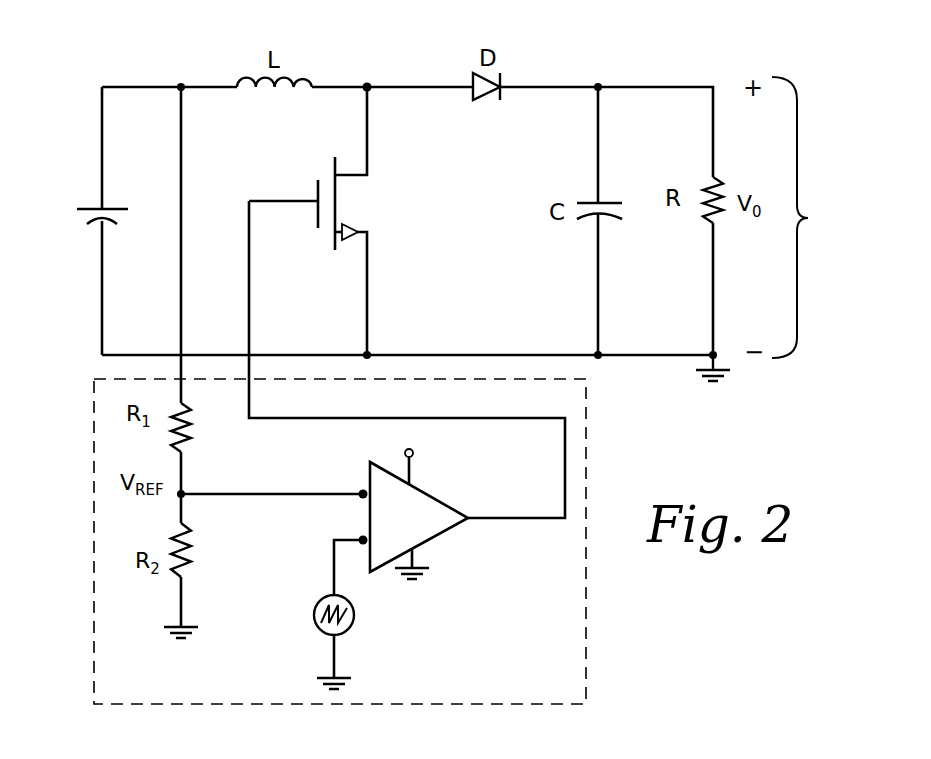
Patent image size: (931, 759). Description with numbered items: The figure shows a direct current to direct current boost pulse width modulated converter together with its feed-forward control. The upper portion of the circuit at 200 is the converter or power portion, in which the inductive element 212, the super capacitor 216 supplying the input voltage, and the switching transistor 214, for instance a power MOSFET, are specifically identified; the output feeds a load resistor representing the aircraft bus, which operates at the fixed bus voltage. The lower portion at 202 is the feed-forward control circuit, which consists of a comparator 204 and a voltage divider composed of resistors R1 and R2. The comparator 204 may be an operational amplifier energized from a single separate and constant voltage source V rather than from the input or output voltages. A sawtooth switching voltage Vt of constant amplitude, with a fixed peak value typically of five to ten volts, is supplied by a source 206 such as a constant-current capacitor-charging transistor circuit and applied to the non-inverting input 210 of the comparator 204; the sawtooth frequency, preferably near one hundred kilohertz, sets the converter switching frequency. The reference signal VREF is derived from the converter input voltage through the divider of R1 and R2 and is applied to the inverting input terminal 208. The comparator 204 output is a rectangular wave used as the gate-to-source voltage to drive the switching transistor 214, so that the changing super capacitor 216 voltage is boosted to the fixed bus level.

The direct current to direct current converter or power portion 200 is at (821, 217).
The feed-forward control circuit 202 is at (94, 450).
The comparator 204 is at (432, 540).
The sawtooth switching voltage source 206 is at (352, 628).
The inverting input terminal 208 is at (363, 490).
The non-inverting input 210 is at (360, 538).
The inductive element 212 is at (313, 85).
The switching transistor 214 is at (345, 172).
The super capacitor 216 is at (98, 226).